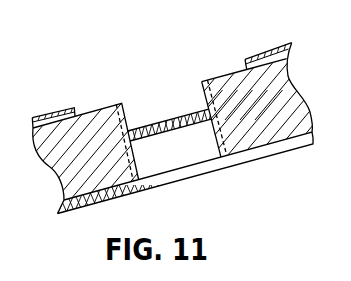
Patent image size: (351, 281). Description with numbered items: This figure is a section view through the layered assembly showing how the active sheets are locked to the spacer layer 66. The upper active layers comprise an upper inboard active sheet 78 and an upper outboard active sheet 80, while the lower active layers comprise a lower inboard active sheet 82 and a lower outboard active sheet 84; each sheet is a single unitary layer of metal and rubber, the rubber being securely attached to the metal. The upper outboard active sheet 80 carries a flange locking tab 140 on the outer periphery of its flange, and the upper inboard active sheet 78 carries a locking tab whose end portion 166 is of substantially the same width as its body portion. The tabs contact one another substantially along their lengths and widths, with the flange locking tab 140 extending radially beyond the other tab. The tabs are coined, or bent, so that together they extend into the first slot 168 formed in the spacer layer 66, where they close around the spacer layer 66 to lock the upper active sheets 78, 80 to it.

The spacer layer 66 is at (278, 80).
The upper inboard active sheet 78 is at (57, 112).
The upper outboard active sheet 80 is at (259, 54).
The lower inboard active sheet 82 is at (62, 203).
The lower outboard active sheet 84 is at (68, 211).
The flange locking tab 140 is at (165, 120).
The end portion 166 is at (148, 140).
The first slot 168 is at (152, 165).